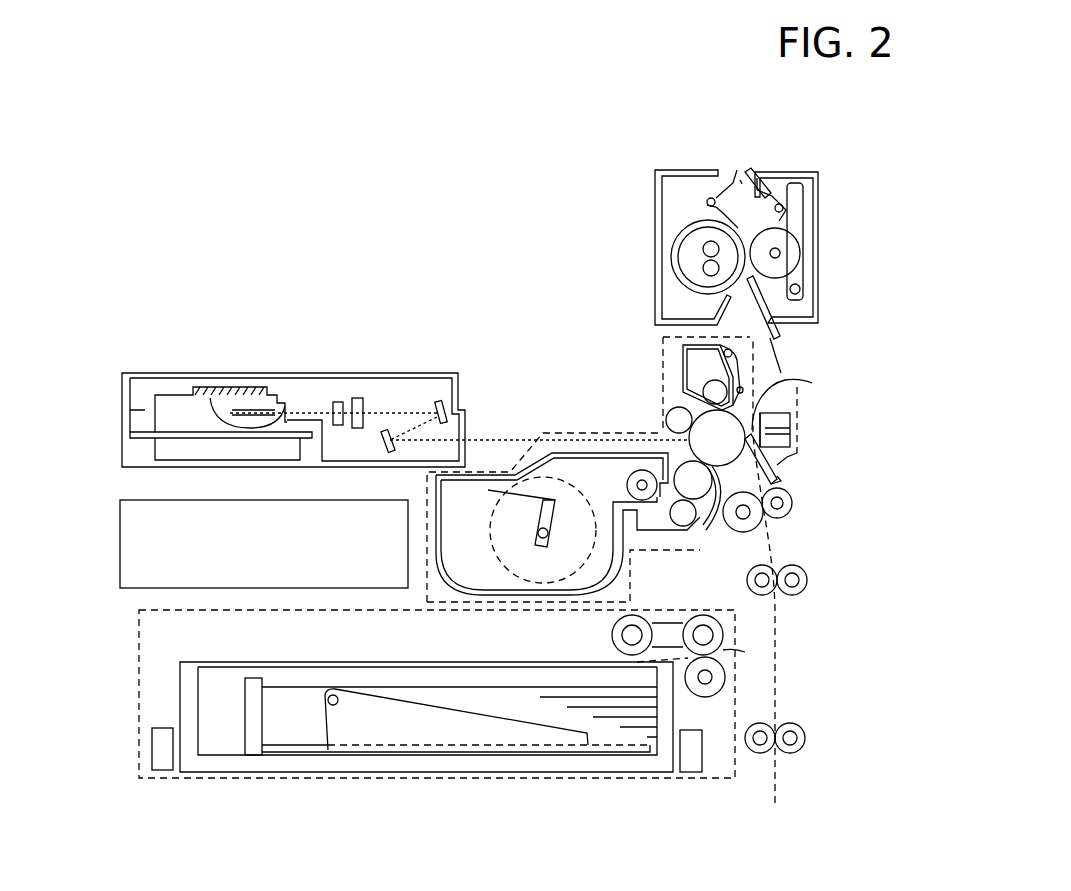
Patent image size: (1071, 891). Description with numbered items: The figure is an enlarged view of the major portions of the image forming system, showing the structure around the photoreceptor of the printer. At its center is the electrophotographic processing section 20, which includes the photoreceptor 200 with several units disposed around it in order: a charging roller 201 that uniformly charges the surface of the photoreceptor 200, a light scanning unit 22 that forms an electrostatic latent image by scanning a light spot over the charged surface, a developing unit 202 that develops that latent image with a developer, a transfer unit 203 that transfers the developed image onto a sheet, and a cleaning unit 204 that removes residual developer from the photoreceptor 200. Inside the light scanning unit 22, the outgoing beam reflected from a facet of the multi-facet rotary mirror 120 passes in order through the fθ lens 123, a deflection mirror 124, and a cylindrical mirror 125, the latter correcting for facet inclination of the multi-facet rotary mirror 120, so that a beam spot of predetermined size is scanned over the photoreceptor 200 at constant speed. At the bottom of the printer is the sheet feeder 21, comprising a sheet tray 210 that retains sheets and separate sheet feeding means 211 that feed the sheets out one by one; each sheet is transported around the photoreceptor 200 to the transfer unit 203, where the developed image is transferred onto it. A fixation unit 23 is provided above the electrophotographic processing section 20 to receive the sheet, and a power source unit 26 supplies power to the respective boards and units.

The electrophotographic processing section 20 is at (835, 433).
The sheet feeder 21 is at (737, 705).
The light scanning unit 22 is at (278, 373).
The fixation unit 23 is at (705, 170).
The power source unit 26 is at (120, 532).
The multi-facet rotary mirror 120 is at (248, 405).
The fθ lens 123 is at (348, 400).
The deflection mirror 124 is at (443, 403).
The cylindrical mirror 125 is at (385, 450).
The photoreceptor 200 is at (783, 382).
The charging roller 201 is at (665, 408).
The developing unit 202 is at (662, 538).
The transfer unit 203 is at (792, 420).
The cleaning unit 204 is at (683, 363).
The sheet tray 210 is at (180, 700).
The separate sheet feeding means 211 is at (612, 633).